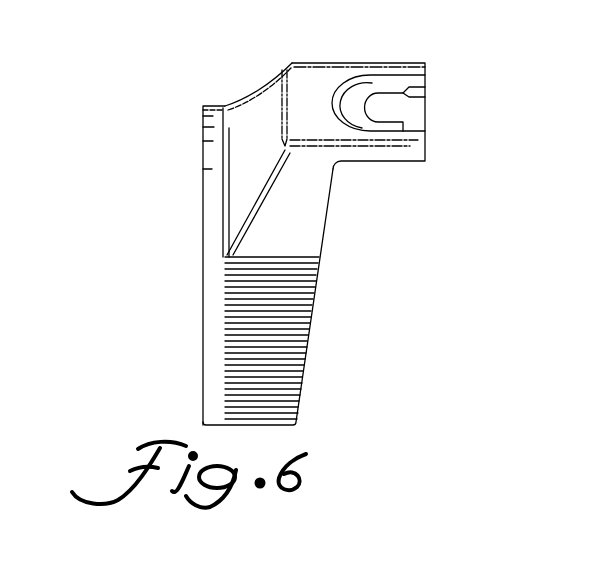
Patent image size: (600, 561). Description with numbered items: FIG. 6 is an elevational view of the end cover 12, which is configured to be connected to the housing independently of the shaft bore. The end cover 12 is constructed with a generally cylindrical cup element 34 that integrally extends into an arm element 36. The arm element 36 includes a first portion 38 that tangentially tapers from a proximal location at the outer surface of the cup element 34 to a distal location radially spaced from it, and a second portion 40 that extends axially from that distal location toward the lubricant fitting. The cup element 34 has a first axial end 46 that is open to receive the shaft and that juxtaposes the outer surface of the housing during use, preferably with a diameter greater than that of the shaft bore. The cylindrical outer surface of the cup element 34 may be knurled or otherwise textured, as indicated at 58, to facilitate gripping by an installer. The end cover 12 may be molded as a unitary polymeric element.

The end cover 12 is at (152, 148).
The cup element 34 is at (196, 229).
The arm element 36 is at (336, 47).
The first portion 38 is at (252, 108).
The second portion 40 is at (300, 77).
The first axial end 46 is at (310, 367).
The knurled or textured surface 58 is at (305, 312).